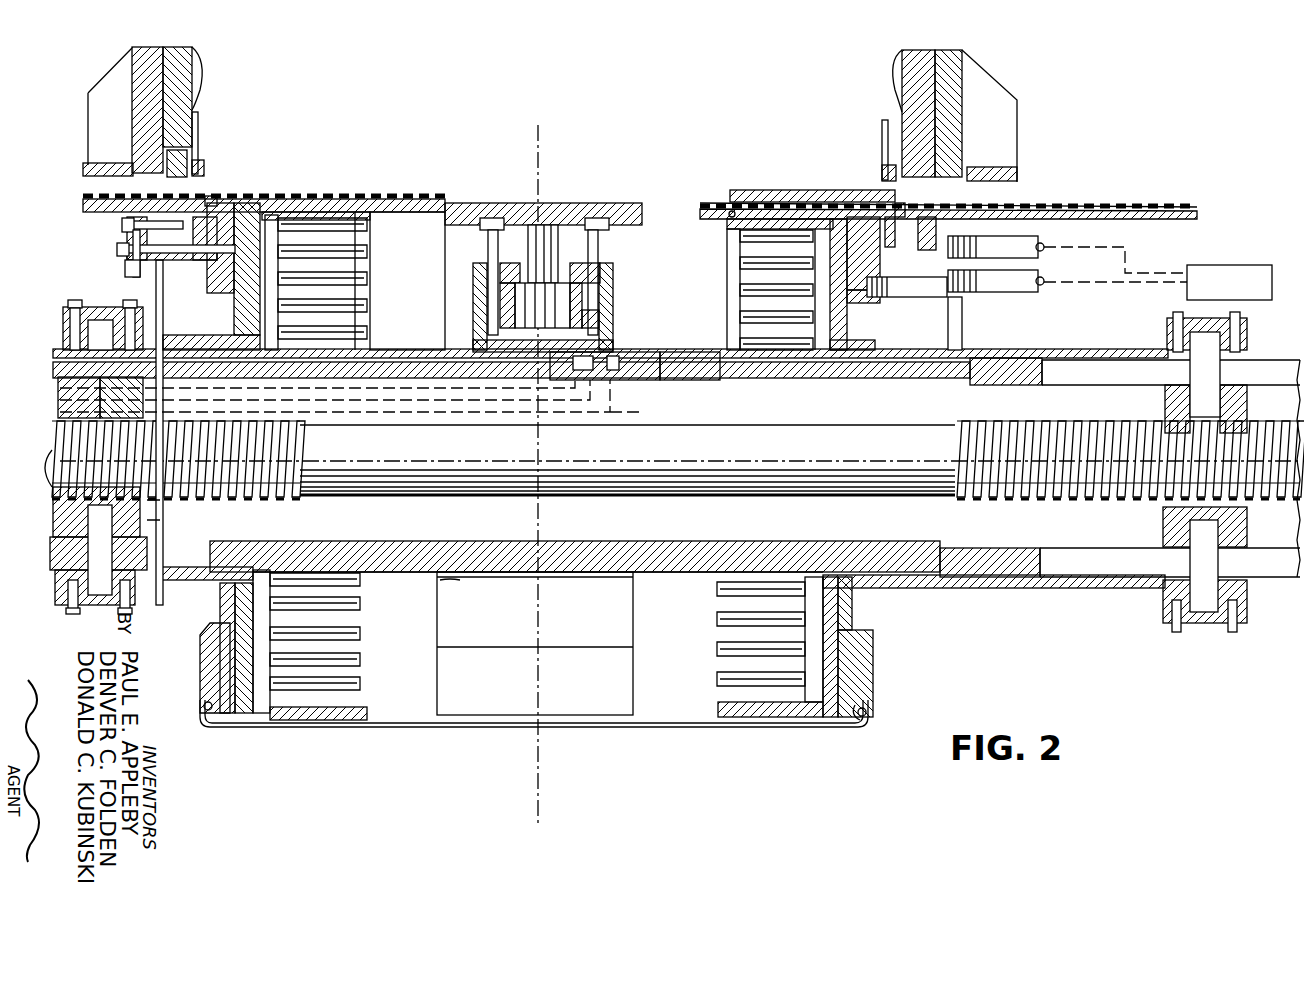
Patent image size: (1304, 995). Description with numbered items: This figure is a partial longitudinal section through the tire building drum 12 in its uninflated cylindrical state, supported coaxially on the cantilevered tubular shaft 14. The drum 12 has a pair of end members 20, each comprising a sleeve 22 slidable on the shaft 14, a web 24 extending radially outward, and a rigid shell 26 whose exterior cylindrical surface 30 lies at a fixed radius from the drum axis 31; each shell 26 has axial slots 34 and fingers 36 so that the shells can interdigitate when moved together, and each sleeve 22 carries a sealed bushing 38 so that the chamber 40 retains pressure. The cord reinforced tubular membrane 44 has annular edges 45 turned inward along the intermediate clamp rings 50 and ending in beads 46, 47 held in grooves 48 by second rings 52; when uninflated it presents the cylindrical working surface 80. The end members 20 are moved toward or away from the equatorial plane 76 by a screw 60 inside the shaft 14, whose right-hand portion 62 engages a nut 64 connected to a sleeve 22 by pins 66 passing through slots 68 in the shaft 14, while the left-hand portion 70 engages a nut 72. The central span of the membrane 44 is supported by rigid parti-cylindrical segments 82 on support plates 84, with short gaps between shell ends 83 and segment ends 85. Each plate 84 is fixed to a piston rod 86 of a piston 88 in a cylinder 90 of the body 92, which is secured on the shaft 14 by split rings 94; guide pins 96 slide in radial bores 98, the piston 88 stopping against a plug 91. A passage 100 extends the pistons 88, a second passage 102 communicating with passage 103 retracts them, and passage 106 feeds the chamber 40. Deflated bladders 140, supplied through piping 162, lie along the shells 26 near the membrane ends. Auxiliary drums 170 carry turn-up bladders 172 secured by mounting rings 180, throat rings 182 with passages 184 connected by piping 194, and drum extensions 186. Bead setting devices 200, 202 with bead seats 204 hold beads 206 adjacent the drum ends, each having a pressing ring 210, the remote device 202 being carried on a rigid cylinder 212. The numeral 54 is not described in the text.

The tire building drum 12 is at (636, 178).
The shaft 14 is at (60, 360).
The end members 20 is at (97, 304).
The sleeve 22 is at (80, 342).
The web 24 is at (232, 305).
The shell 26 is at (350, 235).
The exterior cylindrical surface 30 is at (365, 216).
The drum axis 31 is at (655, 465).
The slots 34 is at (350, 290).
The fingers 36 is at (350, 265).
The bushing 38 is at (842, 380).
The chamber 40 is at (705, 385).
The tubular membrane 44 is at (440, 205).
The annular edges 45 is at (800, 205).
The annular bead 46 is at (732, 211).
The annular bead 47 is at (215, 262).
The annular groove 48 is at (862, 720).
The intermediate clamp ring 50 is at (212, 285).
The second annular ring 52 is at (140, 247).
The shell 54 is at (415, 728).
The screw 60 is at (805, 493).
The right-hand threaded portion 62 is at (1030, 510).
The nut 64 is at (1262, 578).
The pins 66 is at (95, 325).
The slots 68 is at (1040, 385).
The left-hand threaded portion 70 is at (305, 497).
The nut 72 is at (150, 515).
The equatorial plane 76 is at (540, 785).
The cylindrical outer working surface 80 is at (580, 205).
The parti-cylindrical segments 82 is at (610, 222).
The ends of the shells 83 is at (355, 705).
The support plate 84 is at (600, 242).
The axial ends of the segments 85 is at (437, 615).
The piston rod 86 is at (528, 248).
The piston 88 is at (515, 310).
The cylinders 90 is at (560, 390).
The plug 91 is at (500, 264).
The body 92 is at (610, 320).
The split rings 94 is at (475, 346).
The guide pins 96 is at (605, 272).
The radial bores 98 is at (600, 292).
The passage 100 is at (62, 388).
The second passage 102 is at (600, 402).
The passage 103 is at (635, 420).
The passage 106 is at (635, 385).
The inflatable elastomeric bladder 140 is at (355, 212).
The flexible piping 162 is at (1020, 300).
The auxiliary drums 170 is at (1138, 229).
The turn-up bladder 172 is at (85, 196).
The mounting rings 180 is at (215, 198).
The throat rings 182 is at (123, 242).
The passages 184 is at (1000, 240).
The drum extensions 186 is at (85, 206).
The flexible piping 194 is at (1040, 258).
The bead setting device 200 is at (102, 74).
The bead setting device 202 is at (897, 62).
The bead retaining seat 204 is at (205, 176).
The beads 206 is at (198, 150).
The pressing ring 210 is at (195, 90).
The rigid cylinder 212 is at (88, 165).